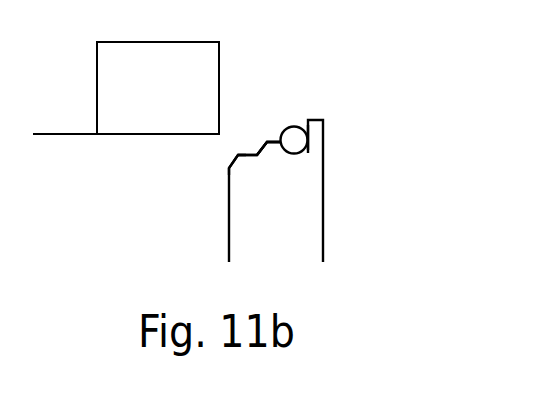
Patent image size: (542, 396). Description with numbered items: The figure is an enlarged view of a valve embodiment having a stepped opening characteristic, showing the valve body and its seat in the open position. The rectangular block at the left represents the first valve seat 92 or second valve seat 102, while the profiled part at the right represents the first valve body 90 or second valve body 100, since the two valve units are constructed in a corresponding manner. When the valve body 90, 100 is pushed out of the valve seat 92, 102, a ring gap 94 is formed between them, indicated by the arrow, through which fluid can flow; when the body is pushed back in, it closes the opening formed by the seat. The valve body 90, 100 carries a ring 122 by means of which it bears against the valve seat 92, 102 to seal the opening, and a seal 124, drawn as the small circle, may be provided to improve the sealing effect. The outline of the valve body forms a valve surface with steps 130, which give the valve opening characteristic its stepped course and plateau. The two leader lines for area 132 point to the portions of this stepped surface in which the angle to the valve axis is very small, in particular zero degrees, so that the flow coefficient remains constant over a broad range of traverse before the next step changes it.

The first valve seat 92 is at (126, 88).
The second valve seat 102 is at (203, 100).
The steps 130 is at (257, 100).
The seal 124 is at (294, 143).
The ring 122 is at (313, 137).
The area 132 is at (273, 143).
The first valve body 90 is at (346, 191).
The second valve body 100 is at (312, 200).
The ring gap 94 is at (221, 150).